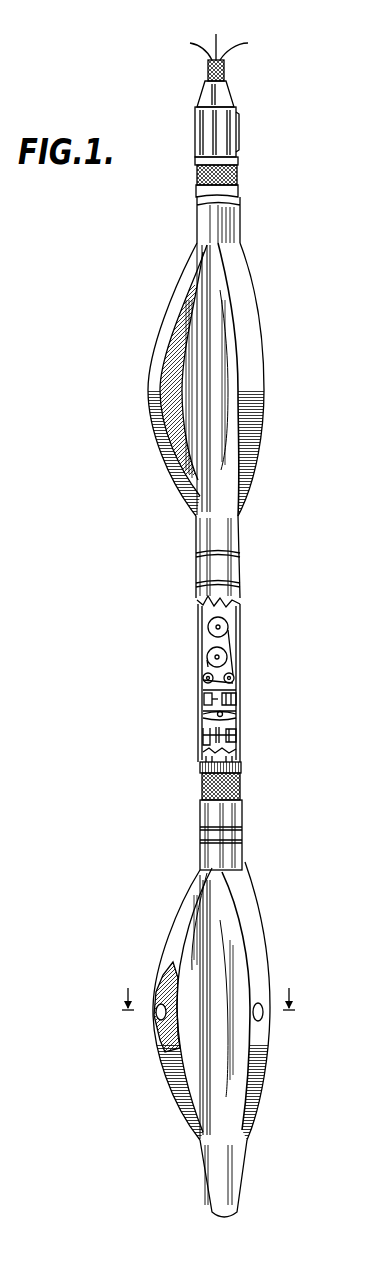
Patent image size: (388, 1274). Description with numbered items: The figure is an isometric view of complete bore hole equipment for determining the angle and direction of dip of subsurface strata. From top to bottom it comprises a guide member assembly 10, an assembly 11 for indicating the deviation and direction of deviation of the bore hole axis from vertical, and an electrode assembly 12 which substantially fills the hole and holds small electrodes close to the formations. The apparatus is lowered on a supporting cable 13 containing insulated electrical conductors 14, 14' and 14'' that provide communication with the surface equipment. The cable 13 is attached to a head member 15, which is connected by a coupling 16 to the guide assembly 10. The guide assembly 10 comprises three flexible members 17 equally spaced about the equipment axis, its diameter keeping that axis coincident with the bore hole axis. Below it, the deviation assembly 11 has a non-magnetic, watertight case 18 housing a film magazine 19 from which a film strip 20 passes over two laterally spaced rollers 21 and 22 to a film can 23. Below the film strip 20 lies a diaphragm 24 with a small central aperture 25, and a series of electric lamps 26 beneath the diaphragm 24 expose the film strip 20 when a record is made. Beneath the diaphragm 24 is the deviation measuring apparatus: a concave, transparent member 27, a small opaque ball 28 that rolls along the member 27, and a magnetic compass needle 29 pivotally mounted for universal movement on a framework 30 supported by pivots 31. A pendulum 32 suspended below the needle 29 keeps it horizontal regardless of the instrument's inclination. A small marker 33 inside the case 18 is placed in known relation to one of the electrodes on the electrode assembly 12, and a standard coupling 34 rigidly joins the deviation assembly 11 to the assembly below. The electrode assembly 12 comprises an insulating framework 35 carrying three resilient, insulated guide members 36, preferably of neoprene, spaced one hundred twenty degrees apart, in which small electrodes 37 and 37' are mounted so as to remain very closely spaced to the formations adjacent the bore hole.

The guide member assembly 10 is at (209, 379).
The deviation indicating assembly 11 is at (193, 683).
The electrode assembly 12 is at (211, 1001).
The supporting cable 13 is at (225, 68).
The insulated electrical conductor 14 is at (191, 48).
The insulated electrical conductor 14' is at (230, 35).
The insulated electrical conductor 14'' is at (246, 48).
The head member 15 is at (238, 133).
The coupling 16 is at (239, 183).
The flexible member 17 is at (265, 352).
The case 18 is at (242, 762).
The film magazine 19 is at (228, 619).
The film strip 20 is at (231, 640).
The roller 21 is at (235, 679).
The roller 22 is at (203, 678).
The film can 23 is at (228, 657).
The diaphragm 24 is at (238, 717).
The aperture 25 is at (237, 691).
The electric lamp 26 is at (232, 700).
The concave transparent member 27 is at (216, 716).
The opaque ball 28 is at (207, 725).
The magnetic compass needle 29 is at (238, 746).
The framework 30 is at (205, 751).
The pivot 31 is at (237, 736).
The pendulum 32 is at (208, 756).
The marker 33 is at (206, 712).
The coupling 34 is at (241, 795).
The insulating framework 35 is at (244, 860).
The guide member 36 is at (254, 948).
The electrode 37 is at (148, 1007).
The electrode 37' is at (280, 995).